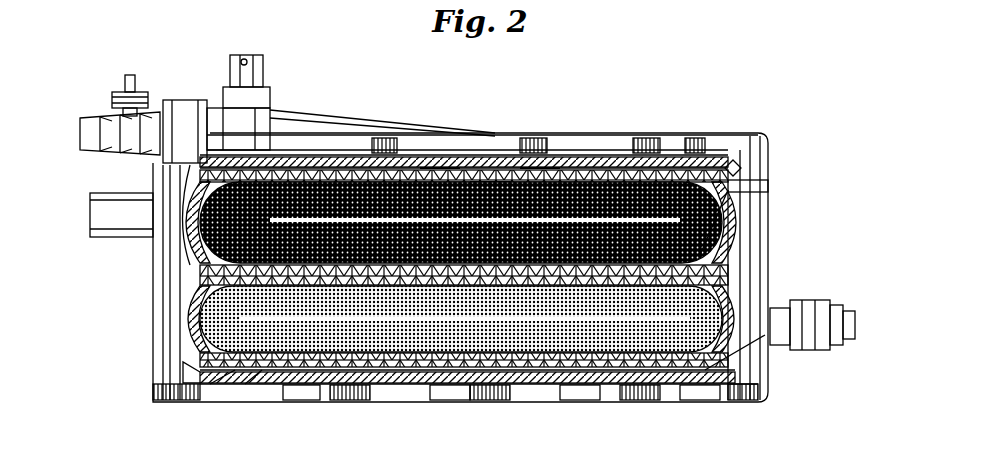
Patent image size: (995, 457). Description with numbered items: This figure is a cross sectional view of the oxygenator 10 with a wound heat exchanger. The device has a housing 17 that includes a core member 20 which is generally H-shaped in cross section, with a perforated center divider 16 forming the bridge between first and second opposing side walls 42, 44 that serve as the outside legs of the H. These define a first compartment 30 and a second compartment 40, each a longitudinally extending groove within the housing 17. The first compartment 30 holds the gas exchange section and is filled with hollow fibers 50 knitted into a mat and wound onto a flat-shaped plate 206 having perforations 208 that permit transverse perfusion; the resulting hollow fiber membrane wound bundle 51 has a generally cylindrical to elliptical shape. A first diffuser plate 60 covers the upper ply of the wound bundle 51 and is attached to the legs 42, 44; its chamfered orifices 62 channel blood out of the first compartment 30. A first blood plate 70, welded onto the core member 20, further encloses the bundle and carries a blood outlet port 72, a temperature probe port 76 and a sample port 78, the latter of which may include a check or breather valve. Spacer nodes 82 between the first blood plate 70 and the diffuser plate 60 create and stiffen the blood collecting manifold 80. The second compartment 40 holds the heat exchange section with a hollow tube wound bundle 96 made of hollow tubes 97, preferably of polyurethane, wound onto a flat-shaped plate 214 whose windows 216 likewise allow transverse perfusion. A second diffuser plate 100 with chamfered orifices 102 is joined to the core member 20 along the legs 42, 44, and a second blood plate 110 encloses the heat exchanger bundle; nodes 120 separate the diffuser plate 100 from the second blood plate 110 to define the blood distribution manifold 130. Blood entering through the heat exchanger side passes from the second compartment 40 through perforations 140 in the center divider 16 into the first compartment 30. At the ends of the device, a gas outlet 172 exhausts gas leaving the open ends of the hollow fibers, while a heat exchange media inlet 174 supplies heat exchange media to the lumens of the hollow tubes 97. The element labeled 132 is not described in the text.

The oxygenator 10 is at (778, 198).
The center divider 16 is at (205, 280).
The housing 17 is at (210, 150).
The core member 20 is at (748, 254).
The first compartment 30 is at (408, 180).
The second compartment 40 is at (488, 367).
The first side wall 42 is at (732, 307).
The second side wall 44 is at (203, 262).
The hollow fibers 50 is at (392, 178).
The hollow fiber membrane wound bundle 51 is at (295, 172).
The first diffuser plate 60 is at (694, 162).
The chamfered orifices 62 is at (563, 176).
The first blood plate 70 is at (678, 158).
The blood outlet port 72 is at (80, 130).
The temperature probe port 76 is at (252, 57).
The sample port 78 is at (130, 75).
The blood collecting manifold 80 is at (744, 166).
The spacer nodes 82 is at (492, 176).
The hollow tube wound bundle 96 is at (468, 370).
The hollow tubes 97 is at (705, 372).
The second diffuser plate 100 is at (234, 382).
The chamfered orifices 102 is at (342, 370).
The second blood plate 110 is at (278, 400).
The nodes 120 is at (542, 368).
The blood distribution manifold 130 is at (632, 368).
The side wall ribs 132 is at (188, 334).
The perforations 140 is at (745, 222).
The gas outlet 172 is at (90, 212).
The heat exchange media inlet 174 is at (855, 333).
The flat-shaped plate 206 is at (537, 176).
The perforations 208 is at (442, 178).
The flat-shaped core or plate 214 is at (265, 380).
The windows 216 is at (532, 368).